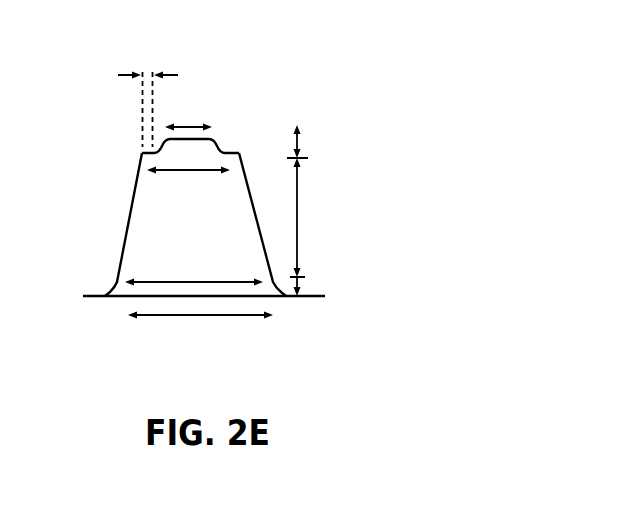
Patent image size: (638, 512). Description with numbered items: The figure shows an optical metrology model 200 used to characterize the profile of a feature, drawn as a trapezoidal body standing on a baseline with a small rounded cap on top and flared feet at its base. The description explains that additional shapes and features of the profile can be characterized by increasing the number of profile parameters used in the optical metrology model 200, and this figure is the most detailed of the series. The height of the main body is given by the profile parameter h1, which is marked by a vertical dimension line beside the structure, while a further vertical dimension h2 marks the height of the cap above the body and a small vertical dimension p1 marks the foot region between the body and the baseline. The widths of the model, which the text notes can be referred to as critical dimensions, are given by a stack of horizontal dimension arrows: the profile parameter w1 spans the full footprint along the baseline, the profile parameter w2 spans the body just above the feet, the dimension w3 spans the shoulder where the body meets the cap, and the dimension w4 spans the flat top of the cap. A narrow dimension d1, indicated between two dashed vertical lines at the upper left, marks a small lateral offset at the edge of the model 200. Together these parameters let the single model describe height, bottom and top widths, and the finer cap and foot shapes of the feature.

The optical metrology model 200 is at (237, 106).
The sidewall thickness dimension d1 is at (148, 90).
The profile parameter w1 is at (200, 347).
The profile parameter w2 is at (194, 267).
The shoulder width dimension w3 is at (188, 190).
The top width dimension w4 is at (188, 112).
The profile parameter h1 is at (318, 217).
The cap height dimension h2 is at (317, 142).
The foot height dimension p1 is at (321, 277).